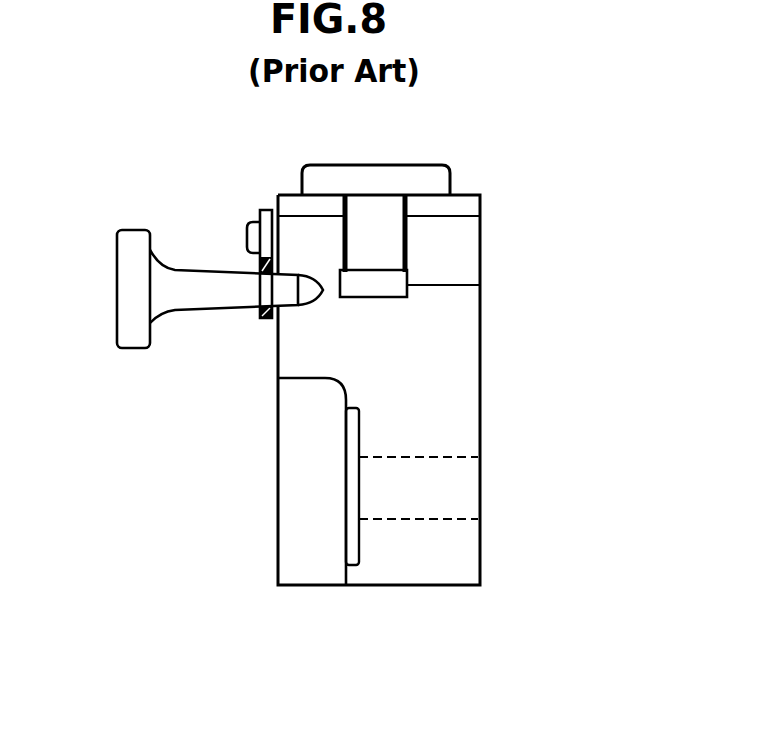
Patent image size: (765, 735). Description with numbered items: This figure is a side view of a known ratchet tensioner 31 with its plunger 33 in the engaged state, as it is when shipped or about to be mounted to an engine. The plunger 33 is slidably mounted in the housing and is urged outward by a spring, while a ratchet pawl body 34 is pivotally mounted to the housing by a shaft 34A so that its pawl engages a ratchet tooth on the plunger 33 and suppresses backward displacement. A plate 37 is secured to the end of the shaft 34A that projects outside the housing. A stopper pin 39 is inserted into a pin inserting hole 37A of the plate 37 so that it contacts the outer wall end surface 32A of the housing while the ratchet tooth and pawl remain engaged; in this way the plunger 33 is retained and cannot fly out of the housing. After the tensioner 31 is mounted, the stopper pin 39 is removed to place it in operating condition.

The ratchet tensioner 31 is at (490, 251).
The plunger 33 is at (422, 175).
The ratchet pawl body 34 is at (365, 220).
The shaft 34A is at (245, 227).
The plate 37 is at (265, 207).
The pin inserting hole 37A is at (263, 319).
The outer wall end surface 32A is at (300, 321).
The stopper pin 39 is at (130, 290).